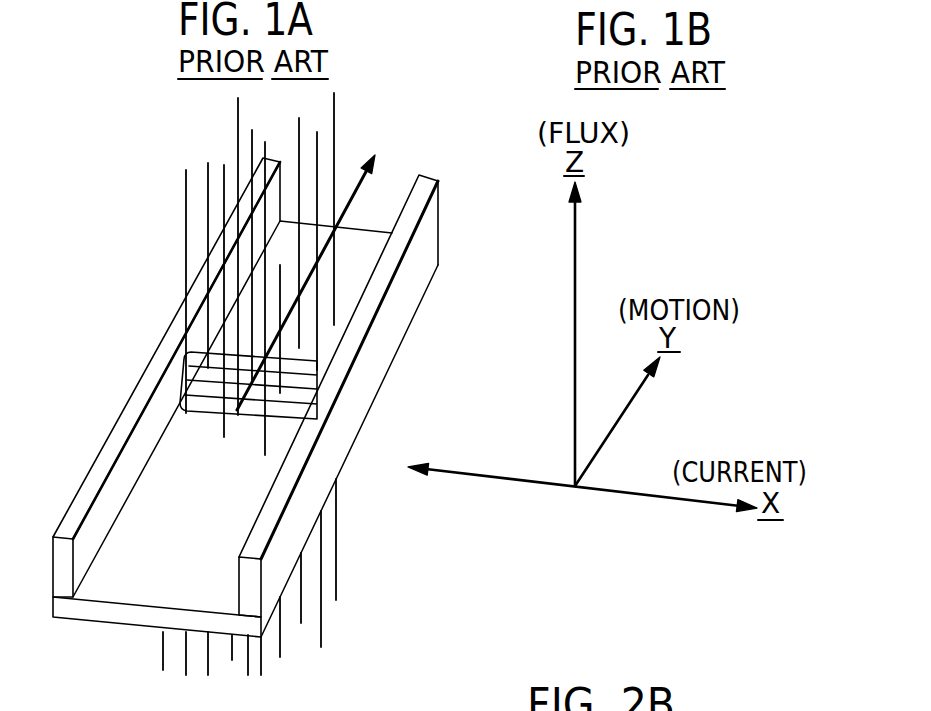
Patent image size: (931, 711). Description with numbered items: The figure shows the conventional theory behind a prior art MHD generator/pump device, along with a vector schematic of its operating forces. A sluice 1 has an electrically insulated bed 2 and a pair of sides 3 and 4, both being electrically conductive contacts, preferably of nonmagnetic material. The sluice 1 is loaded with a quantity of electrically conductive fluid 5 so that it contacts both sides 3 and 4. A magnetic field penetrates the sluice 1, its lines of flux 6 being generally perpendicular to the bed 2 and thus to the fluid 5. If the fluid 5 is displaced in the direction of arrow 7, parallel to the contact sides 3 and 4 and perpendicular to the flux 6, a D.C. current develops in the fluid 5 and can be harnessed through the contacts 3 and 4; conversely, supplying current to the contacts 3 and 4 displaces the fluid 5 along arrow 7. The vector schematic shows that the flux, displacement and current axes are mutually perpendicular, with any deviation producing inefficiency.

The sluice 1 is at (270, 418).
The electrically insulated bed 2 is at (140, 581).
The side 3 is at (93, 460).
The side 4 is at (443, 215).
The electrically conductive fluid 5 is at (192, 370).
The lines of flux 6 is at (344, 588).
The arrow 7 is at (378, 157).